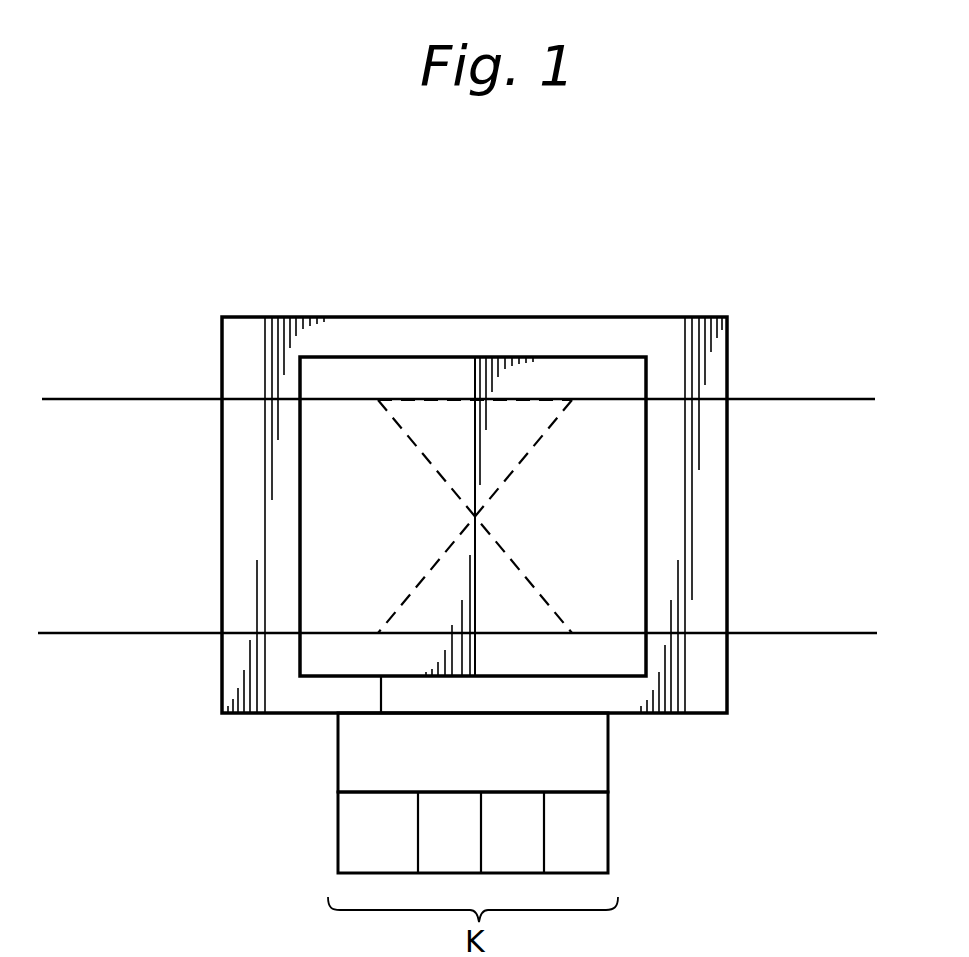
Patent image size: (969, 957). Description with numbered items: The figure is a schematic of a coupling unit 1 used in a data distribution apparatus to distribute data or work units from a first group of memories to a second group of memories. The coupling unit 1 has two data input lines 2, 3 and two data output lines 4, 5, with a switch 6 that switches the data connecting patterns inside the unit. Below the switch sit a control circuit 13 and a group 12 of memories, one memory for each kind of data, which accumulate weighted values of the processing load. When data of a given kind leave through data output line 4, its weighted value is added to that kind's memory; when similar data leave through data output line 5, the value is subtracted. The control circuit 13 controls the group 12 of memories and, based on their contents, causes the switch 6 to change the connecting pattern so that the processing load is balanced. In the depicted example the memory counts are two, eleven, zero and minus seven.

The coupling unit 1 is at (488, 317).
The switch 6 is at (625, 357).
The data input line 2 is at (93, 399).
The data input line 3 is at (78, 633).
The data output line 4 is at (838, 399).
The data output line 5 is at (848, 633).
The control circuit 13 is at (610, 760).
The group of memories 12 is at (610, 848).